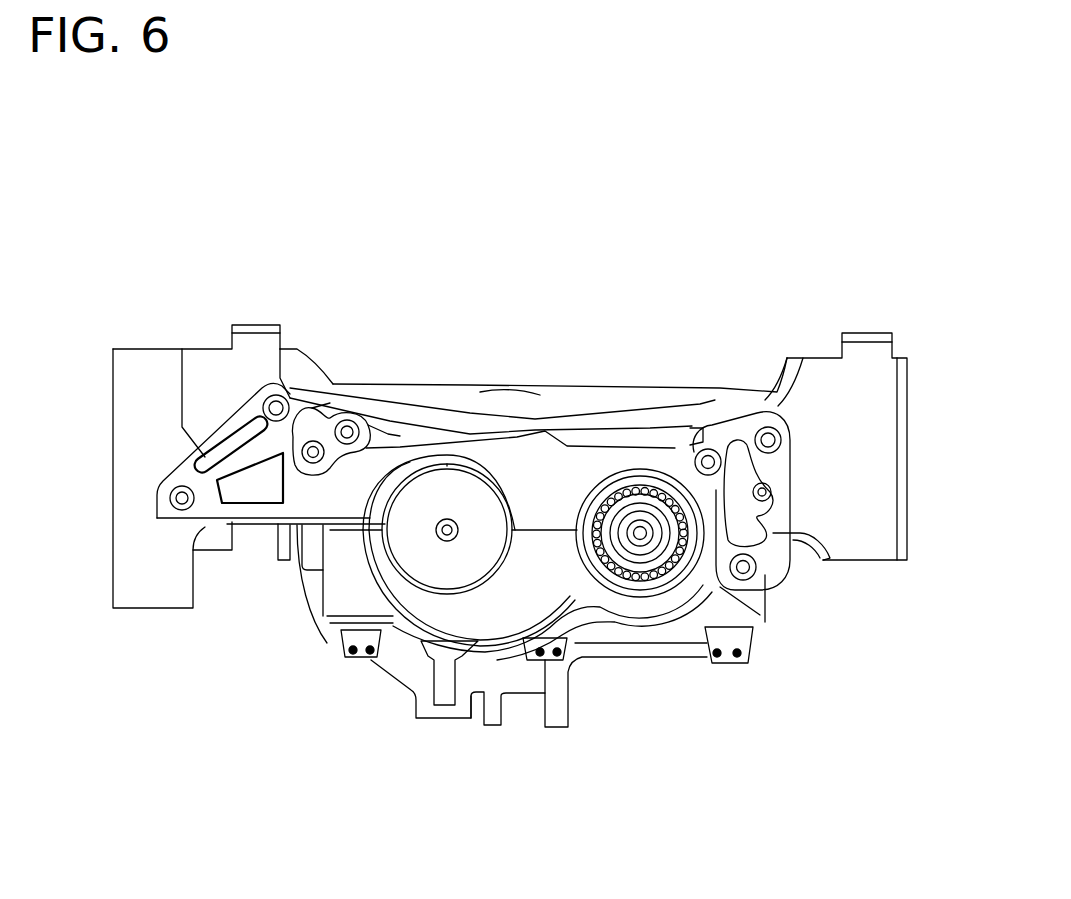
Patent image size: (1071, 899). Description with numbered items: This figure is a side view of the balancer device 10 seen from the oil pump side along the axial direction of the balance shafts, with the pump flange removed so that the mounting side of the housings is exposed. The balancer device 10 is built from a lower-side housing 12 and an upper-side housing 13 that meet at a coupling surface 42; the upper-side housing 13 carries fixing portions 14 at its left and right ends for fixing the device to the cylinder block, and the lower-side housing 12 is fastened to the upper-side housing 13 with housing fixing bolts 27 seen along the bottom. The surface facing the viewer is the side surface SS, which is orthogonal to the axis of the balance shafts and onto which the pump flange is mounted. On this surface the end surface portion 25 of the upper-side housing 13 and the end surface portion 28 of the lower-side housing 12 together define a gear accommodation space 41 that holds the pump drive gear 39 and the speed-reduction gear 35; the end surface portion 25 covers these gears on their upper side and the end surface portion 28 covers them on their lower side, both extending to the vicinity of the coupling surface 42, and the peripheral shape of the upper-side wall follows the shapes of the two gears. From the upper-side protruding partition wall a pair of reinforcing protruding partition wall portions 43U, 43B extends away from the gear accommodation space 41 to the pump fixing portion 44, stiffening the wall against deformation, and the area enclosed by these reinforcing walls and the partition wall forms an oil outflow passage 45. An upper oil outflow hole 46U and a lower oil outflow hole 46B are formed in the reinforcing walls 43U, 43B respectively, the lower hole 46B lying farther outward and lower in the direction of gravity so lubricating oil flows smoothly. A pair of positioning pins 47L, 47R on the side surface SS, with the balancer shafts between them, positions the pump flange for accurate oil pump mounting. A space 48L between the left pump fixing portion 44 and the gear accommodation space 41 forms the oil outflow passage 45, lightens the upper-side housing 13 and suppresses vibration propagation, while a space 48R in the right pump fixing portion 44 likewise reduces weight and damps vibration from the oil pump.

The balancer device 10 is at (605, 354).
The lower-side housing 12 is at (578, 702).
The upper-side housing 13 is at (677, 396).
The fixing portion 14 is at (133, 403).
The end surface portion (upper-side protruding partition wall portion) 25 is at (500, 420).
The housing fixing bolt 27 is at (367, 650).
The end surface portion 28 is at (490, 640).
The speed-reduction gear 35 is at (678, 553).
The pump drive gear 39 is at (497, 512).
The gear accommodation space 41 is at (543, 450).
The coupling surface 42 is at (338, 533).
The upper reinforcing protruding partition wall portion 43U is at (330, 402).
The lower reinforcing protruding partition wall portion 43B is at (293, 555).
The pump fixing portion 44 is at (253, 407).
The oil outflow passage 45 is at (363, 483).
The upper oil outflow hole 46U is at (390, 426).
The lower oil outflow hole 46B is at (237, 527).
The positioning pin 47L is at (347, 427).
The positioning pin 47R is at (708, 450).
The space 48L is at (298, 480).
The space 48R is at (740, 517).
The side surface SS is at (481, 446).